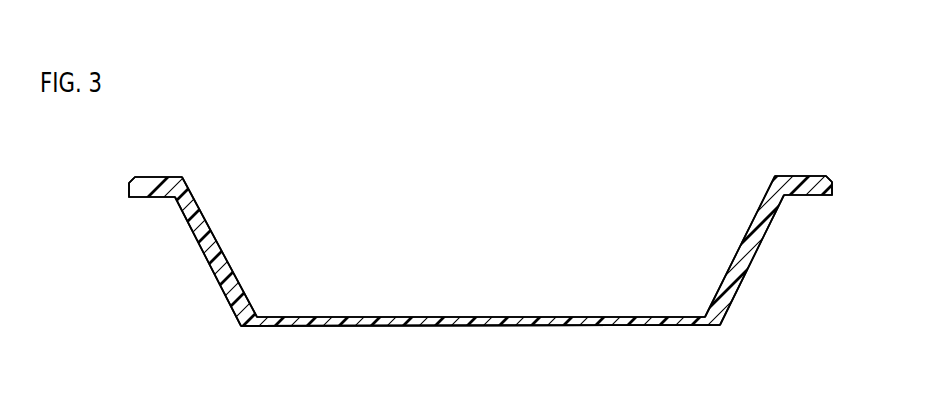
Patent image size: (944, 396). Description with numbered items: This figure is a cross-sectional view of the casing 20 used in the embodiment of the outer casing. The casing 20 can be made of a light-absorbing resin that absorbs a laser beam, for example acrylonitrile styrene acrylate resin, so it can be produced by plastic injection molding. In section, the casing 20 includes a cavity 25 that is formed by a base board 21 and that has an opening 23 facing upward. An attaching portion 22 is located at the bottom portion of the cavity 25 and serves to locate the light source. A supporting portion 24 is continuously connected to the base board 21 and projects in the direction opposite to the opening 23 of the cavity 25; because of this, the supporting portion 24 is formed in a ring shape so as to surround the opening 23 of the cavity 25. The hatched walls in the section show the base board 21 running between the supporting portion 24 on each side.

The casing 20 is at (493, 156).
The base board 21 is at (610, 327).
The attaching portion 22 is at (473, 327).
The opening 23 is at (638, 176).
The supporting portion 24 is at (158, 183).
The cavity 25 is at (368, 267).